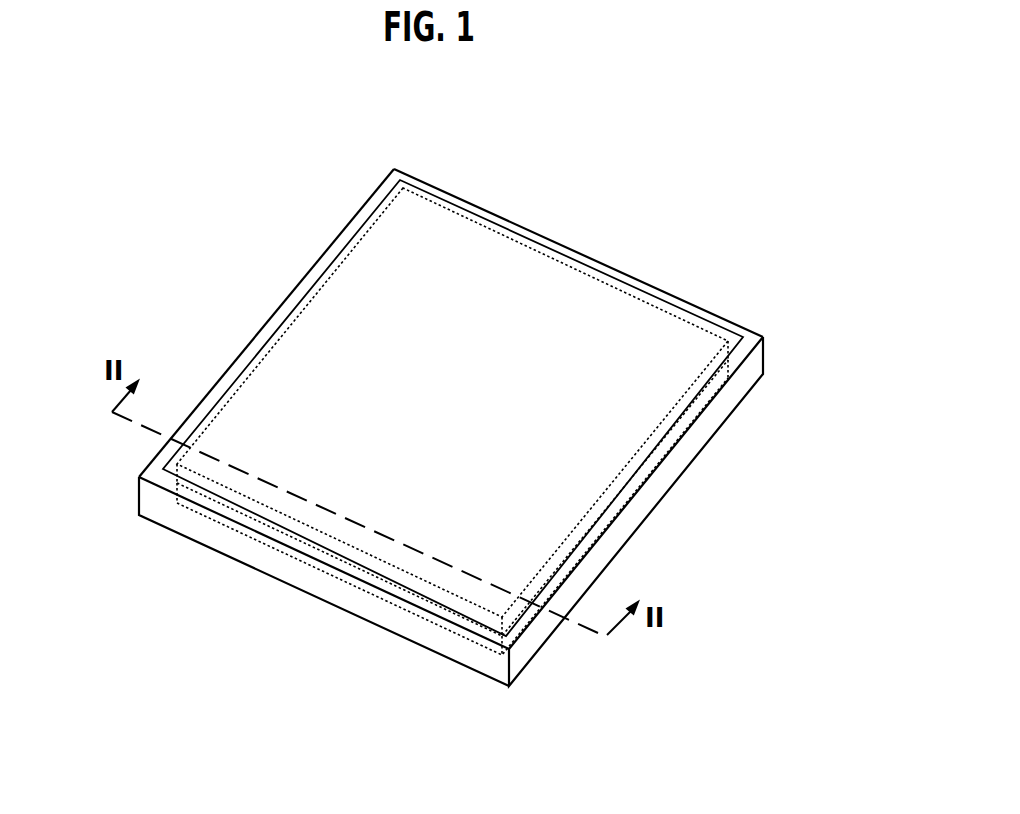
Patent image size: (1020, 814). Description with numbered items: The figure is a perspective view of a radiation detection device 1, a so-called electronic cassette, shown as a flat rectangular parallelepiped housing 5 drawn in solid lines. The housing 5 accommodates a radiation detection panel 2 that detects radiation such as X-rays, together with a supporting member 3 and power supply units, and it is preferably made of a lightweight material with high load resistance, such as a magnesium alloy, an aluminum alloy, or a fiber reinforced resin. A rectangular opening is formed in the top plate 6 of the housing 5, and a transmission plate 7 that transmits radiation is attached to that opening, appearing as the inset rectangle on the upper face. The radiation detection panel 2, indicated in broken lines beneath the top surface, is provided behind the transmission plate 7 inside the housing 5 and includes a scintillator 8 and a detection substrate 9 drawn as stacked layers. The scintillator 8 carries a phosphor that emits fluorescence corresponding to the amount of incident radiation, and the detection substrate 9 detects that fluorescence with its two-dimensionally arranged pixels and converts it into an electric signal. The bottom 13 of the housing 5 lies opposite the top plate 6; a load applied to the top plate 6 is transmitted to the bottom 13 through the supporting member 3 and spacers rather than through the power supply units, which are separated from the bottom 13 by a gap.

The radiation detection device 1 is at (746, 136).
The radiation detection panel 2 is at (165, 585).
The supporting member 3 is at (492, 635).
The housing 5 is at (701, 471).
The top plate 6 is at (394, 169).
The transmission plate 7 is at (322, 276).
The scintillator 8 is at (238, 508).
The detection substrate 9 is at (203, 482).
The bottom 13 is at (278, 580).